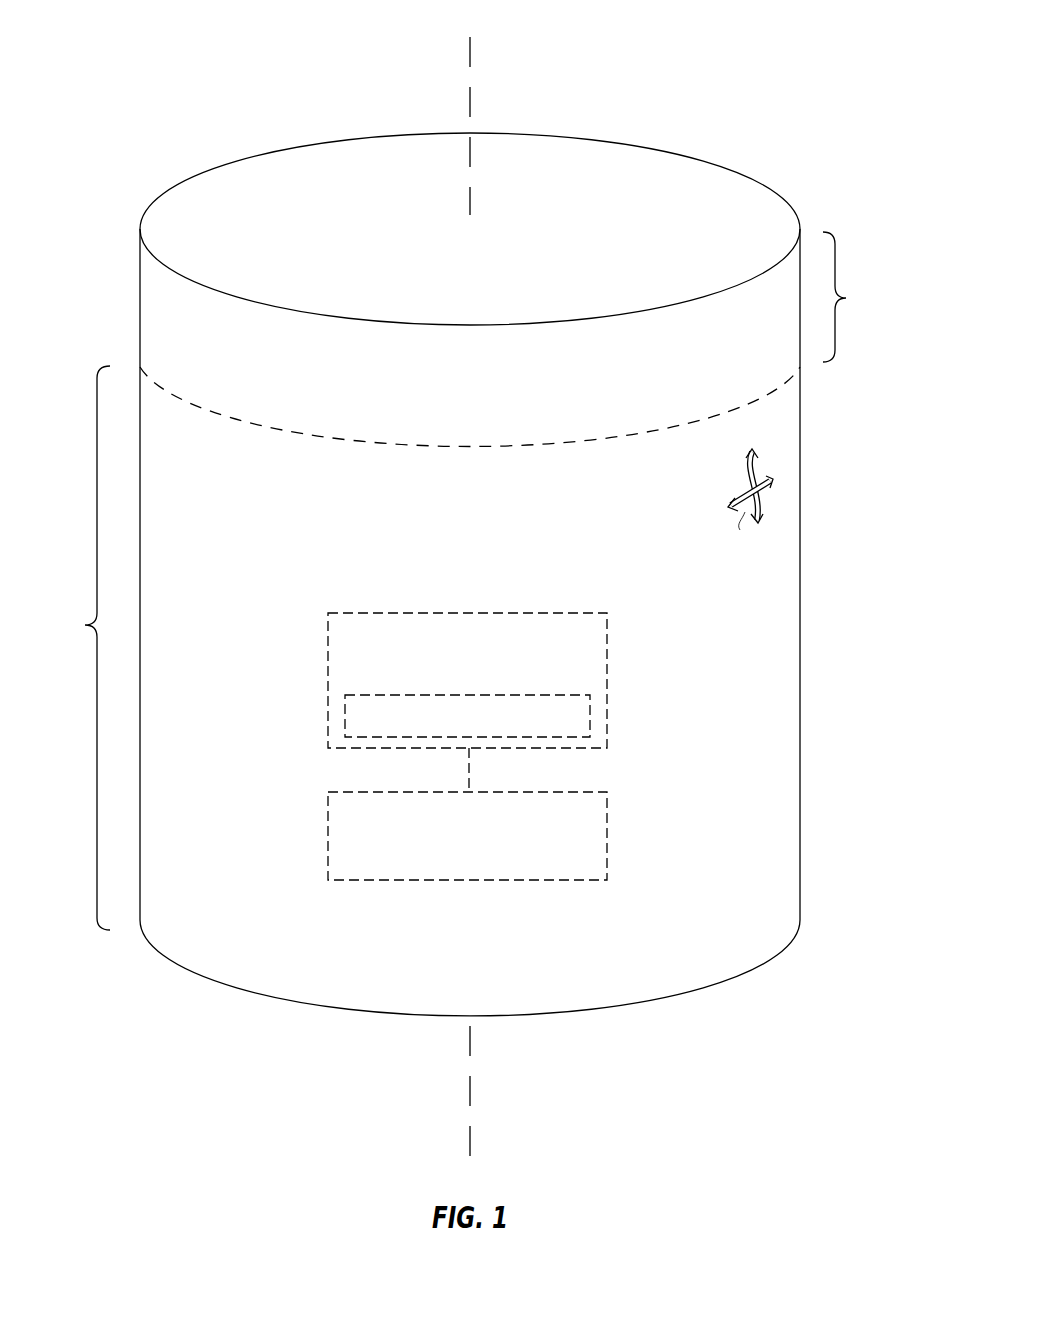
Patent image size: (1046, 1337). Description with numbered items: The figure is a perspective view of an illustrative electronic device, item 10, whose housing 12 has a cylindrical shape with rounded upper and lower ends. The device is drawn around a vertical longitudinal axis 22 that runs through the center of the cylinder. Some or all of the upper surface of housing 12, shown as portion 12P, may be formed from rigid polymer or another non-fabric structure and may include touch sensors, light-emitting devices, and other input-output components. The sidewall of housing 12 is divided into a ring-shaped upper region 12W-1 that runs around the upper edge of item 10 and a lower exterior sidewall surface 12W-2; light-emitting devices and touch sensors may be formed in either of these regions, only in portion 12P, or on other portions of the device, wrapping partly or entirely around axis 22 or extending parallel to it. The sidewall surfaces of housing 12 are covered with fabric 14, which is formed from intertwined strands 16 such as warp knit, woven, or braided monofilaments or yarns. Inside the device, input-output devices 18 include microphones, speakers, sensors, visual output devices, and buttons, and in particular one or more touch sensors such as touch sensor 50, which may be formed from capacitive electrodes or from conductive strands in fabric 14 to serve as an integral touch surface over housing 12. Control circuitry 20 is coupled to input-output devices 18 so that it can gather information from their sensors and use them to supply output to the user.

The item 10 is at (738, 69).
The housing 12 is at (800, 725).
The portion 12P is at (565, 212).
The ring-shaped upper region 12W-1 is at (864, 297).
The sidewall surface 12W-2 is at (64, 648).
The fabric 14 is at (724, 478).
The strands 16 is at (750, 512).
The input-output devices 18 is at (607, 645).
The control circuitry 20 is at (607, 826).
The longitudinal axis 22 is at (472, 50).
The touch sensor 50 is at (590, 707).